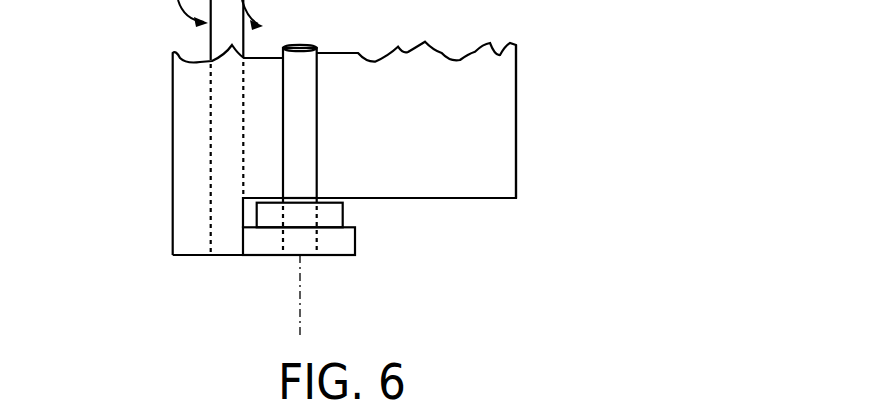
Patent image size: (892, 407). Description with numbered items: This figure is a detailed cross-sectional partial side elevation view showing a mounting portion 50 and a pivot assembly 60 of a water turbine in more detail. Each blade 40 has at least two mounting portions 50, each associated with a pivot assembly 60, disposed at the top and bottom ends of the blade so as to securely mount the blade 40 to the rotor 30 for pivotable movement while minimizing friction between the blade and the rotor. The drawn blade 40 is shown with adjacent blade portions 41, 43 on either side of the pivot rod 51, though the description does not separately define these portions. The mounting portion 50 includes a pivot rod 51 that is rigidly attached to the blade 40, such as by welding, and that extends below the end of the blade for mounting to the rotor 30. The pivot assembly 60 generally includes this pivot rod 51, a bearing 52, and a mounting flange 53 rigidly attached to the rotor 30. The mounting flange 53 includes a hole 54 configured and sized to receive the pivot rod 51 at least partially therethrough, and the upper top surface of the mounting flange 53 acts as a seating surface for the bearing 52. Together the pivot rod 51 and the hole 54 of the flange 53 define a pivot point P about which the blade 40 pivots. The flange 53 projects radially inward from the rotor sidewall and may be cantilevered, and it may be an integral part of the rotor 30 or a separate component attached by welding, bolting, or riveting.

The rotor 30 is at (208, 243).
The blade 40 is at (150, 199).
The first housing portion 41 is at (173, 129).
The second housing portion 43 is at (509, 122).
The mounting portion 50 is at (333, 174).
The pivot rod 51 is at (317, 92).
The bearing 52 is at (343, 207).
The mounting flange 53 is at (356, 238).
The hole 54 is at (290, 241).
The pivot assembly 60 is at (312, 298).
The pivot point P is at (308, 329).